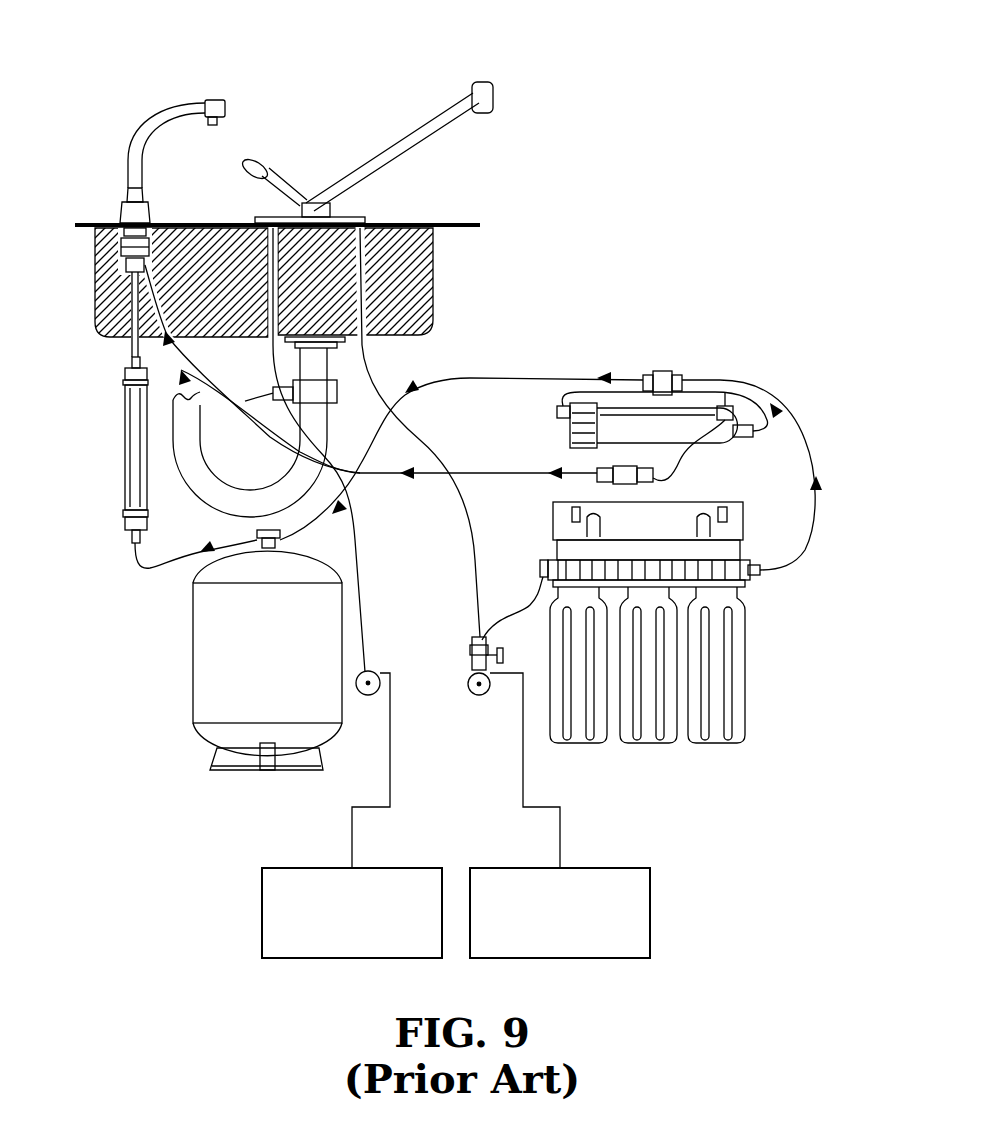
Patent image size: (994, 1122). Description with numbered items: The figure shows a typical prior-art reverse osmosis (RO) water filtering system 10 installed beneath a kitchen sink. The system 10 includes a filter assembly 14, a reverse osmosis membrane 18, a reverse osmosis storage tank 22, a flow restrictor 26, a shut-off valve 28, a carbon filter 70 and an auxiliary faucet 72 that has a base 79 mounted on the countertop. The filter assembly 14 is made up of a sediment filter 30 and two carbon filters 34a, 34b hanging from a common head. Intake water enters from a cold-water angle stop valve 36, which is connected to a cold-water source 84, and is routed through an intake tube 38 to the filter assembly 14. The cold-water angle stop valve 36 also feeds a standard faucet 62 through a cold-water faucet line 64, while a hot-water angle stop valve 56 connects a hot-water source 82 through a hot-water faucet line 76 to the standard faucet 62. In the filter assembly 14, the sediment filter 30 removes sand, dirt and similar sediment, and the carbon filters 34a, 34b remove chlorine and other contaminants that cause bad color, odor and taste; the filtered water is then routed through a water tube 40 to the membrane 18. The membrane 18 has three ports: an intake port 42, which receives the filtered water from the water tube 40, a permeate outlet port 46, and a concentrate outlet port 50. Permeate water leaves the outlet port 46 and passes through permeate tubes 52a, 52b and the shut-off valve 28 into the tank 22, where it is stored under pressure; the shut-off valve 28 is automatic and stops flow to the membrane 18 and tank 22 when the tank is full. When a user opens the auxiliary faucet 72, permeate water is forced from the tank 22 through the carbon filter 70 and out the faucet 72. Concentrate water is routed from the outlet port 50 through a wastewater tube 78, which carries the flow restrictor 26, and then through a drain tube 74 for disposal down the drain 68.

The RO water filtering system 10 is at (114, 40).
The filter assembly 14 is at (657, 533).
The reverse osmosis membrane 18 is at (570, 440).
The reverse osmosis storage tank 22 is at (277, 643).
The flow restrictor 26 is at (668, 482).
The shut-off valve 28 is at (660, 373).
The sediment filter 30 is at (580, 750).
The carbon filter 34a is at (647, 747).
The carbon filter 34b is at (717, 747).
The cold-water angle stop valve 36 is at (477, 698).
The intake tube 38 is at (530, 605).
The water tube 40 is at (802, 540).
The intake port 42 is at (555, 410).
The permeate outlet port 46 is at (745, 438).
The concentrate outlet port 50 is at (704, 378).
The permeate tube 52a is at (742, 378).
The permeate tube 52b is at (545, 376).
The hot-water angle stop valve 56 is at (374, 697).
The standard faucet 62 is at (430, 127).
The cold-water faucet line 64 is at (474, 512).
The drain 68 is at (322, 415).
The carbon filter 70 is at (118, 448).
The auxiliary faucet 72 is at (175, 107).
The drain tube 74 is at (210, 364).
The hot-water faucet line 76 is at (370, 567).
The wastewater tube 78 is at (432, 480).
The base 79 is at (170, 223).
The hot-water source 82 is at (322, 867).
The cold-water source 84 is at (530, 867).